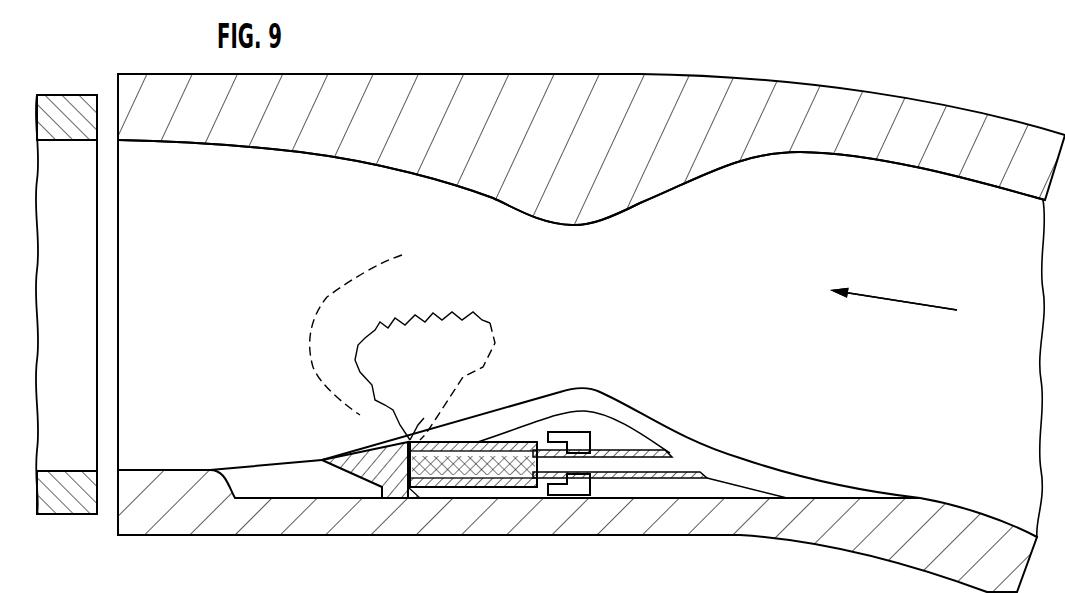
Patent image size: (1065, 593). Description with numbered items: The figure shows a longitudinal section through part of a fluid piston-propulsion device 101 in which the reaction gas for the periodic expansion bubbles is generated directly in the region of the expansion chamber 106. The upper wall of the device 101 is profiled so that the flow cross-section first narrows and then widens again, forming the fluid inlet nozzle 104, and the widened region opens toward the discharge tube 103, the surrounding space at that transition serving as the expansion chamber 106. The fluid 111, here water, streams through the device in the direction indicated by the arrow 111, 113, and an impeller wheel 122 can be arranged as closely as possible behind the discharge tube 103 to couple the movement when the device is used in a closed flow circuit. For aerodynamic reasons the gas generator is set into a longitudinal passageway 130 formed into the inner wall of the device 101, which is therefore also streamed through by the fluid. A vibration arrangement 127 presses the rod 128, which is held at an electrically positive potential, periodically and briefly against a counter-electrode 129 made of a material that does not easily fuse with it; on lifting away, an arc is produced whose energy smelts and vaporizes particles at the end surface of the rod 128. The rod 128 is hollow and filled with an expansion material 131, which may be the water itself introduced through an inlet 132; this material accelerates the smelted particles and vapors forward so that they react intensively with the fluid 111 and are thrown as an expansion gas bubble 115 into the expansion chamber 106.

The fluid piston-propulsion device 101 is at (591, 275).
The discharge tube 103 is at (243, 183).
The fluid inlet nozzle 104 is at (597, 299).
The expansion chamber 106 is at (397, 241).
The fluid 111 is at (910, 300).
The flow direction 113 is at (893, 299).
The gas bubble 115 is at (332, 330).
The impeller wheel 122 is at (73, 163).
The vibration arrangement 127 is at (579, 442).
The rod 128 is at (473, 473).
The wedge 129 is at (373, 472).
The longitudinal passageway 130 is at (750, 477).
The expansion material 131 is at (480, 472).
The inlet 132 is at (625, 463).